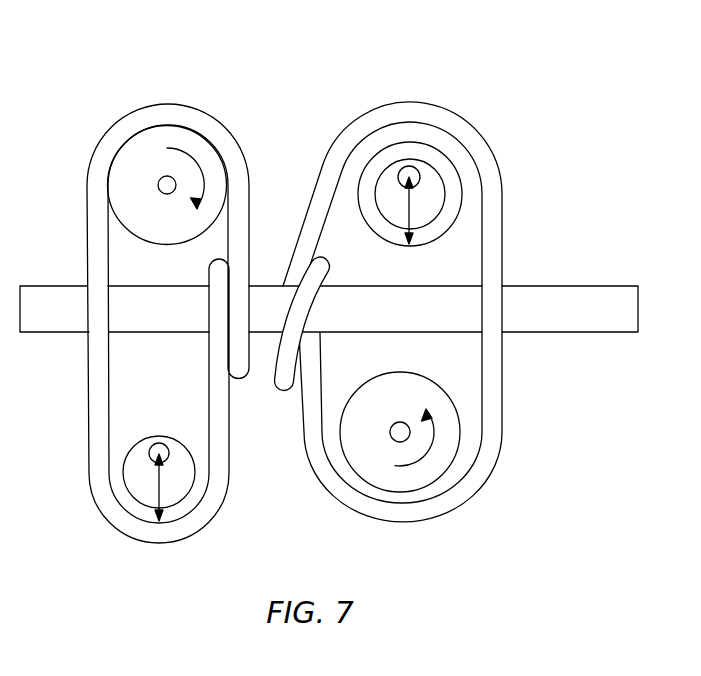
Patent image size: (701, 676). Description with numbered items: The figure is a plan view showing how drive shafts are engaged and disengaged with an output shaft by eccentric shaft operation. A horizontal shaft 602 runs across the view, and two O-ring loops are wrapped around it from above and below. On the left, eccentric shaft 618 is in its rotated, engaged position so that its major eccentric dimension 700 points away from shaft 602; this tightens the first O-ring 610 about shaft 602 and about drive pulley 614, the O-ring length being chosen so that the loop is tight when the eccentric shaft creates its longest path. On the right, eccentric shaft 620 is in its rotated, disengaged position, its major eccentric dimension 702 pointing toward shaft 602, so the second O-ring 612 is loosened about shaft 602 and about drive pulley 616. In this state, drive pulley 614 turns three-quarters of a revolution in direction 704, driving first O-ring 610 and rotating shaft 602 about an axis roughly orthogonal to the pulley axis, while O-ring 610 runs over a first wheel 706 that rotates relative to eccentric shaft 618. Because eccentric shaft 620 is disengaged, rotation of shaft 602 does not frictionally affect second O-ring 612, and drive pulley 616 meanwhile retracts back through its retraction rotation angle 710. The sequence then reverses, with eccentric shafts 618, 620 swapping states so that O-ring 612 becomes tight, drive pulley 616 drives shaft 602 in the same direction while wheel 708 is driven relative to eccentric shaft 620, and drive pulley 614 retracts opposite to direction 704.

The shaft 602 is at (594, 320).
The first O-ring 610 is at (216, 470).
The second O-ring 612 is at (485, 424).
The drive pulley 614 is at (185, 137).
The drive pulley 616 is at (433, 460).
The eccentric shaft 618 is at (177, 507).
The eccentric shaft 620 is at (423, 163).
The major eccentric dimension 700 is at (155, 481).
The major eccentric dimension 702 is at (410, 216).
The direction of rotation 704 is at (198, 170).
The first wheel 706 is at (198, 491).
The wheel 708 is at (453, 190).
The retraction rotation angle 710 is at (415, 462).